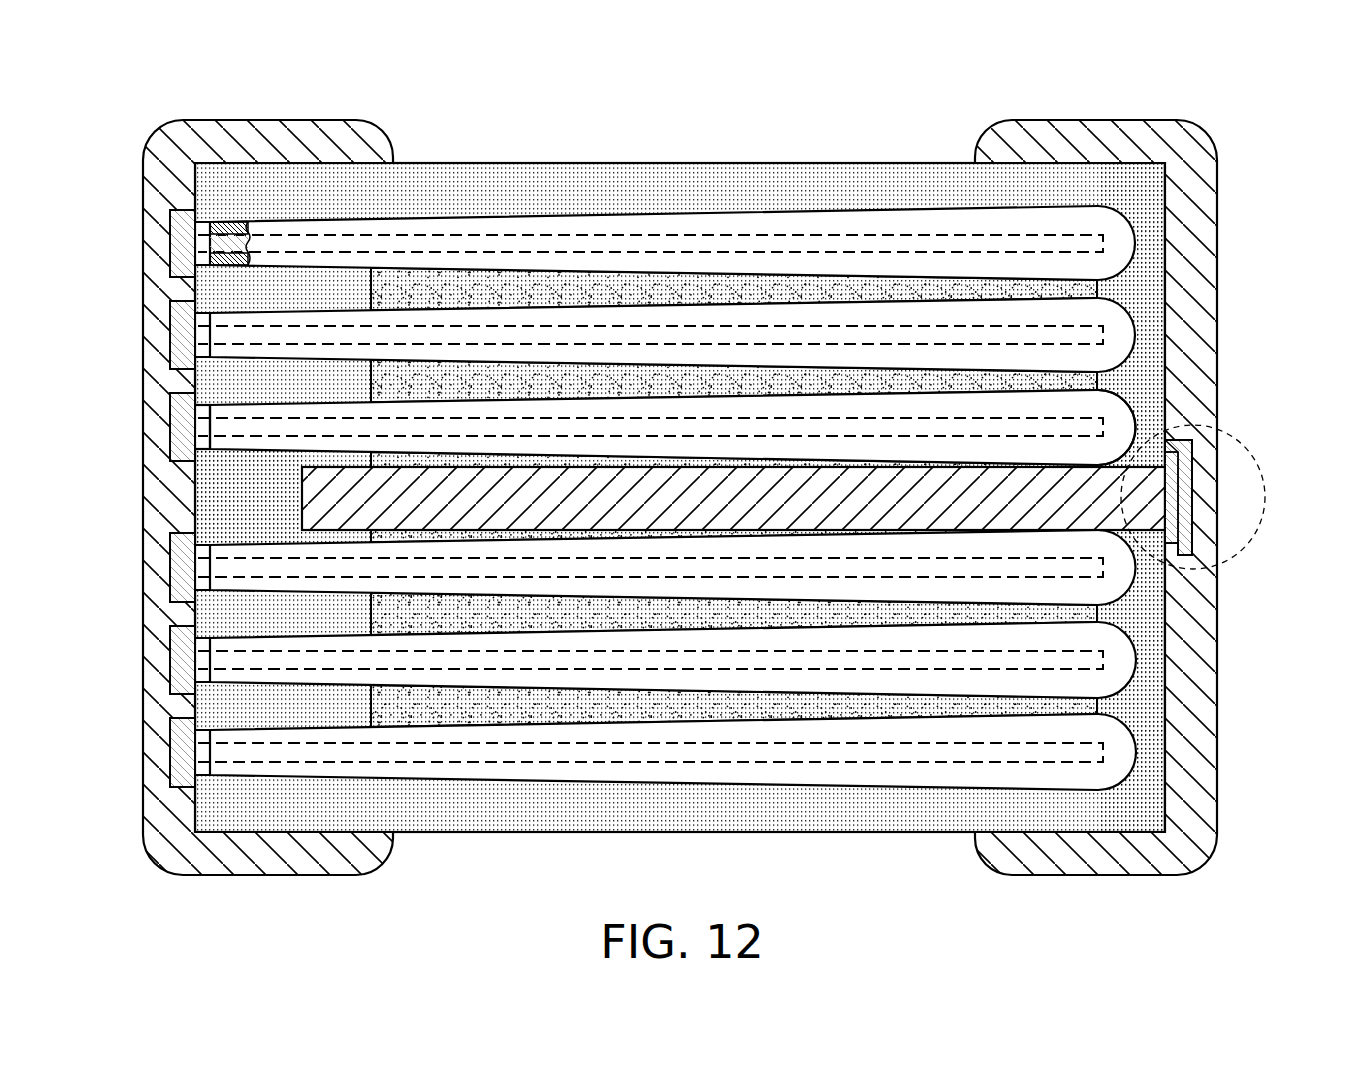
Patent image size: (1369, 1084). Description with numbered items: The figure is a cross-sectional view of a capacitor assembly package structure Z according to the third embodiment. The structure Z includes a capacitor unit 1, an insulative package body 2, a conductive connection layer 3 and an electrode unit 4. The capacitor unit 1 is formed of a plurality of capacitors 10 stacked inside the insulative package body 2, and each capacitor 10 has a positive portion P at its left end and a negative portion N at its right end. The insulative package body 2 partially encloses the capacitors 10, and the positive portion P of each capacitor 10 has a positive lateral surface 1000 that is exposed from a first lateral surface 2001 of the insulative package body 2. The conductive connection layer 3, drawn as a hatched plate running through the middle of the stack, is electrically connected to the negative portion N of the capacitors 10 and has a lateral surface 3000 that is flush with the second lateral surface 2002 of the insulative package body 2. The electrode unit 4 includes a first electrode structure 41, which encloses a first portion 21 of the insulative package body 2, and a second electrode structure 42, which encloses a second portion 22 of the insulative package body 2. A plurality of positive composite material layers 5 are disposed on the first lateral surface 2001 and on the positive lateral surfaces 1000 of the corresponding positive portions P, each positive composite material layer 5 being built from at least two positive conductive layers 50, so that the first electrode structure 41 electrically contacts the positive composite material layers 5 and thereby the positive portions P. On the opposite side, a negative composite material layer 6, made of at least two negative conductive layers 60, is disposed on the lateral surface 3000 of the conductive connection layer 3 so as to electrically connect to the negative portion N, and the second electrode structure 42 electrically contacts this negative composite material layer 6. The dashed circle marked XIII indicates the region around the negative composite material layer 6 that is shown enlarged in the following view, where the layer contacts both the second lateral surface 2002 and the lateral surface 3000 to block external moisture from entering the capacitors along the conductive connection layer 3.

The capacitor assembly package structure Z is at (140, 70).
The capacitor unit 1 is at (659, 498).
The capacitor 10 is at (616, 228).
The insulative package body 2 is at (676, 459).
The first portion 21 is at (215, 503).
The second portion 22 is at (1150, 588).
The first lateral surface 2001 is at (194, 184).
The second lateral surface 2002 is at (1167, 246).
The positive lateral surface 1000 is at (192, 244).
The conductive connection layer 3 is at (299, 491).
The lateral surface 3000 is at (1172, 487).
The electrode unit 4 is at (223, 497).
The first electrode structure 41 is at (160, 705).
The second electrode structure 42 is at (1203, 695).
The positive composite material layer 5 is at (124, 498).
The positive conductive layer 50 is at (178, 322).
The negative composite material layer 6 is at (1259, 500).
The negative conductive layer 60 is at (1170, 502).
The positive portion P is at (190, 426).
The negative portion N is at (1133, 405).
The section view indicator XIII is at (1231, 481).